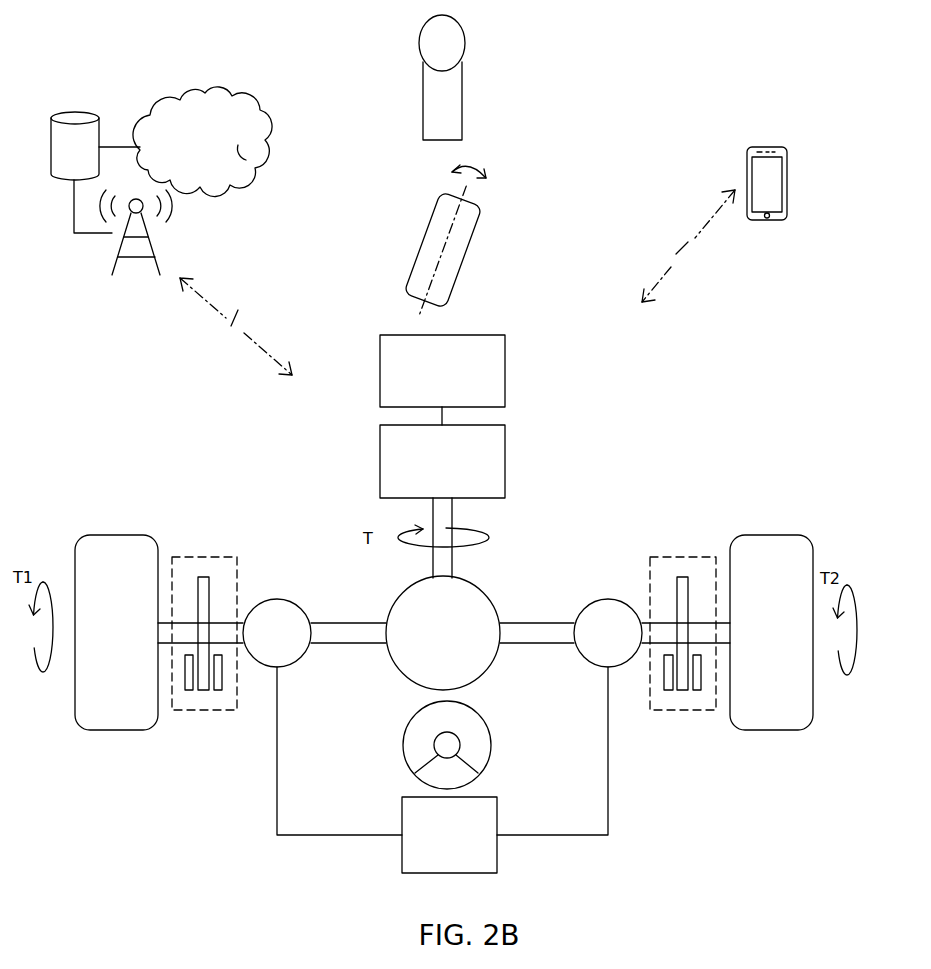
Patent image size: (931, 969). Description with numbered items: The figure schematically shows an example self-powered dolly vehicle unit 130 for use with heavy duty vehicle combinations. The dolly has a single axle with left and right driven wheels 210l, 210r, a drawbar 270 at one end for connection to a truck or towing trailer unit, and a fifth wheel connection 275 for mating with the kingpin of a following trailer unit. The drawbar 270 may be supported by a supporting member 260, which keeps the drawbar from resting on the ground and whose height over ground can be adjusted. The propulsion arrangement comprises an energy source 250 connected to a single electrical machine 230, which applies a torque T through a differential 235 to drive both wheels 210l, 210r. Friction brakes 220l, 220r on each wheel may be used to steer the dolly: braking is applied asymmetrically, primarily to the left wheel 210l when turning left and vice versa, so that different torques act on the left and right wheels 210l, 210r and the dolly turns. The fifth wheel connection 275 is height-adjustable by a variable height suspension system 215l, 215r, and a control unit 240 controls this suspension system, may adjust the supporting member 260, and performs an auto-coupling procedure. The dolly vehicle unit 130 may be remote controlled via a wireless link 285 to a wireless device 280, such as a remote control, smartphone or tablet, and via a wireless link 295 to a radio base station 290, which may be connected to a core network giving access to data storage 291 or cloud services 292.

The dolly vehicle unit 130 is at (659, 62).
The drawbar 270 is at (467, 48).
The supporting member 260 is at (470, 248).
The energy source 250 is at (442, 371).
The electrical machine 230 is at (442, 461).
The differential 235 is at (443, 633).
The variable height suspension system 215l is at (277, 633).
The variable height suspension system 215r is at (608, 633).
The left driven wheel 210l is at (116, 632).
The right driven wheel 210r is at (771, 632).
The left friction brake 220l is at (223, 713).
The right friction brake 220r is at (700, 713).
The fifth wheel connection 275 is at (492, 745).
The control unit 240 is at (449, 835).
The wireless device 280 is at (758, 222).
The wireless link 285 is at (678, 246).
The radio base station 290 is at (125, 277).
The data storage 291 is at (55, 182).
The cloud services 292 is at (202, 142).
The wireless link 295 is at (236, 331).